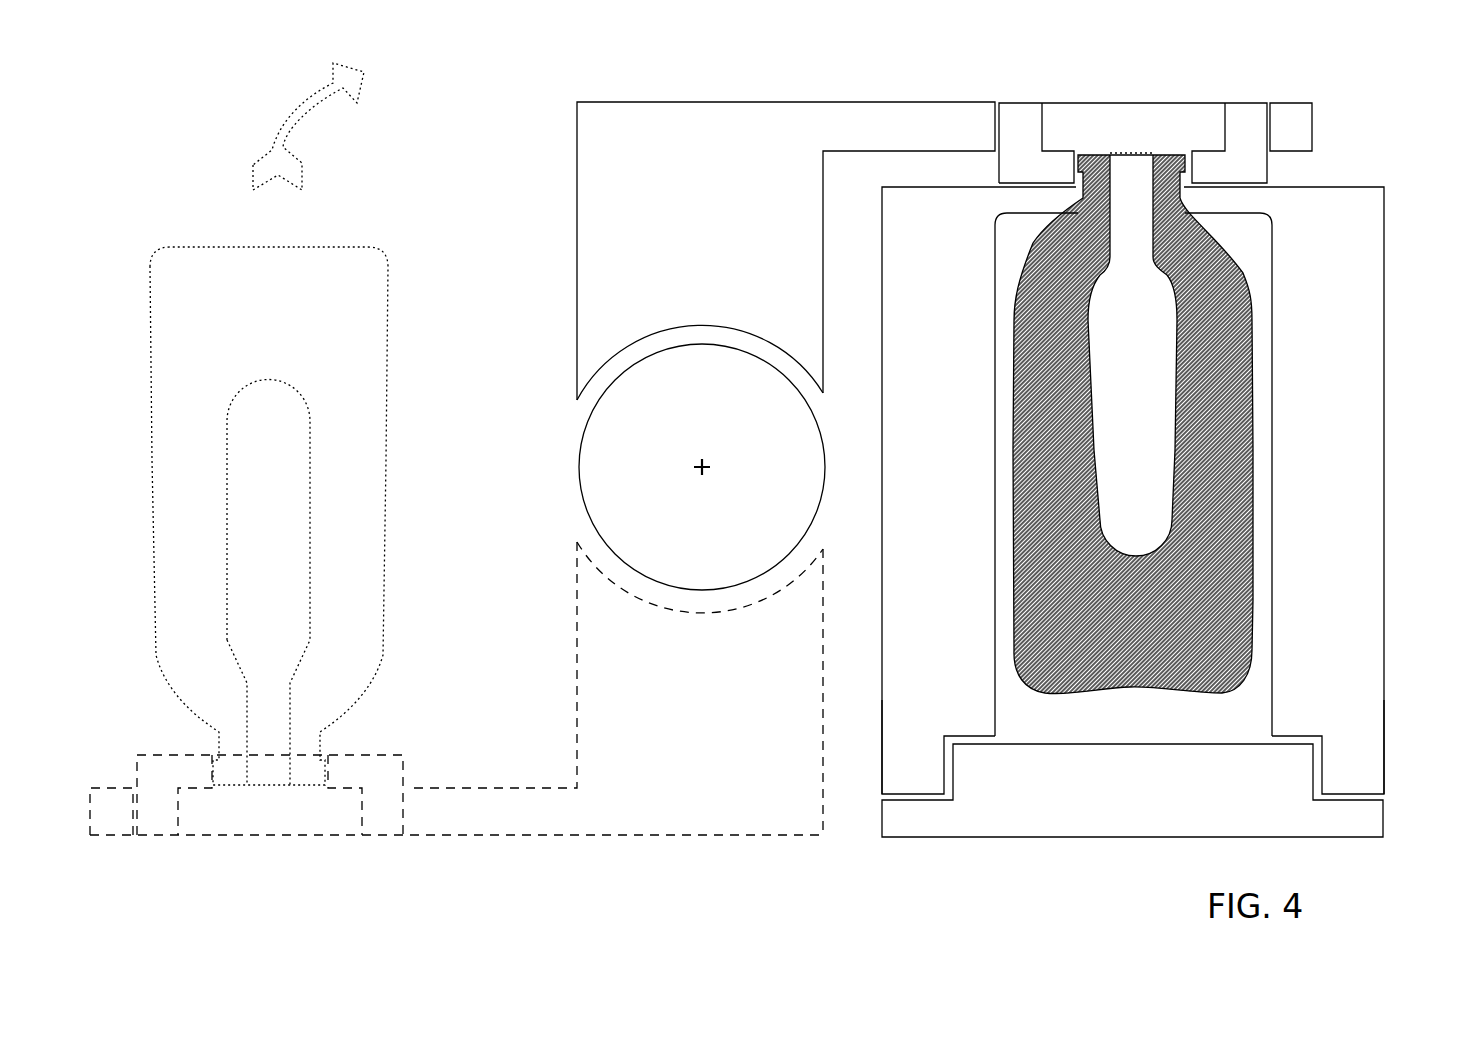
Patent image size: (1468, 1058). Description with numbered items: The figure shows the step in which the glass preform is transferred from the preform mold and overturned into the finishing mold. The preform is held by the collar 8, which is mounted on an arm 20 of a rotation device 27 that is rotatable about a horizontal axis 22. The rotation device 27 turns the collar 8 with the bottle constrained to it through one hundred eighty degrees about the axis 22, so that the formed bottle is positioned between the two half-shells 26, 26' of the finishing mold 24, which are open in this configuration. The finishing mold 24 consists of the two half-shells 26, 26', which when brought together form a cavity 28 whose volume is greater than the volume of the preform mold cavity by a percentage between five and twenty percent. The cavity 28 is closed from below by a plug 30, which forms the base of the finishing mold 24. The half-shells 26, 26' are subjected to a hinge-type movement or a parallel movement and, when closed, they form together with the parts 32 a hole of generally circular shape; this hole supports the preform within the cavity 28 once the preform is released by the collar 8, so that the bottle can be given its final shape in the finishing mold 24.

The collar 8 is at (1243, 124).
The arm 20 is at (528, 805).
The horizontal axis 22 is at (700, 470).
The finishing mold 24 is at (1386, 388).
The half-shell 26 is at (1366, 639).
The half-shell 26' is at (912, 796).
The rotation device 27 is at (593, 412).
The cavity 28 is at (1262, 368).
The plug 30 is at (1070, 790).
The parts 32 is at (1243, 198).